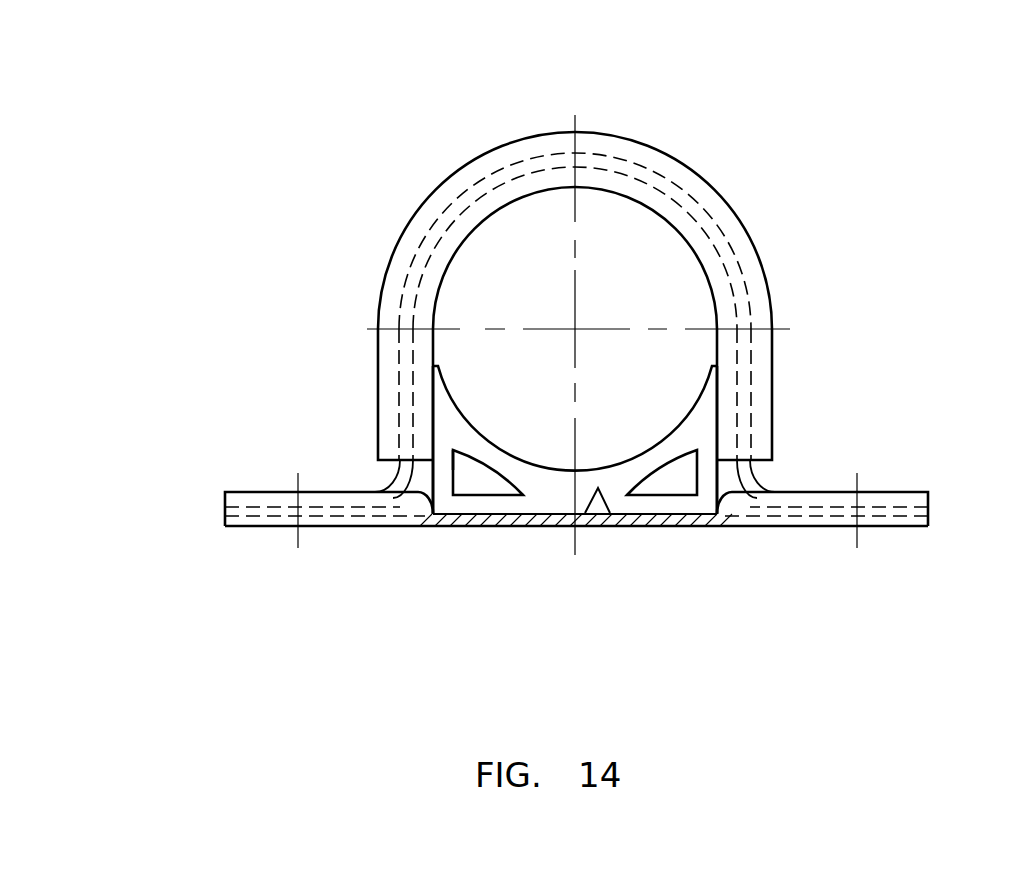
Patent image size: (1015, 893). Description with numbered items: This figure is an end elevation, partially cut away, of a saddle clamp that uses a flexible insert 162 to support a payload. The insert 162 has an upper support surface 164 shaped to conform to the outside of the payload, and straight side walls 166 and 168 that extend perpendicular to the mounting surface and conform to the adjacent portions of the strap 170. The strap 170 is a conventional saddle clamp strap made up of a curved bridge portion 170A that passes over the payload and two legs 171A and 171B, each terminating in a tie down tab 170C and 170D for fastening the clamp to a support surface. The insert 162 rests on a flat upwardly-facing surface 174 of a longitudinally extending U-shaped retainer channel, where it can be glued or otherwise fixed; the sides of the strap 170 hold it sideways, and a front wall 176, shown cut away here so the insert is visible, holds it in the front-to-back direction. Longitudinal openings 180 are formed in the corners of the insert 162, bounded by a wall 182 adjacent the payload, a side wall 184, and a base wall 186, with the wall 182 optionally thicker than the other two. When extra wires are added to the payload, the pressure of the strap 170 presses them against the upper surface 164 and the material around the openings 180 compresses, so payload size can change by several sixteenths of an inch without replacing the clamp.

The strap 170 is at (572, 294).
The curved bridge portion 170A is at (637, 137).
The tie down tab 170C is at (907, 490).
The tie down tab 170D is at (253, 492).
The leg 171A is at (775, 393).
The leg 171B is at (378, 387).
The side wall 184 is at (445, 475).
The front wall 176 is at (576, 598).
The base wall 186 is at (510, 503).
The insert 162 is at (580, 478).
The upper support surface 164 is at (672, 433).
The side wall 166 is at (717, 415).
The side wall 168 is at (445, 367).
The openings 180 is at (470, 485).
The wall adjacent the payload 182 is at (465, 443).
The upwardly-facing surface 174 is at (548, 495).